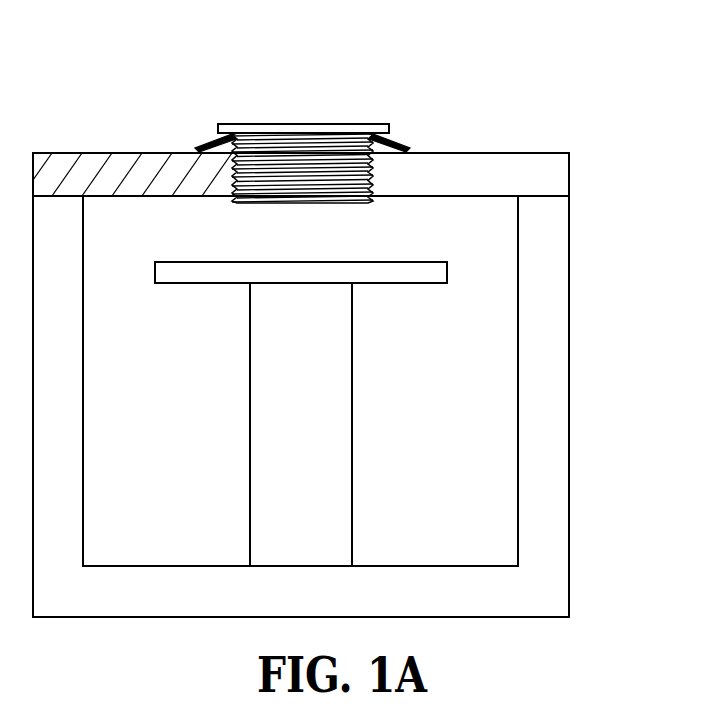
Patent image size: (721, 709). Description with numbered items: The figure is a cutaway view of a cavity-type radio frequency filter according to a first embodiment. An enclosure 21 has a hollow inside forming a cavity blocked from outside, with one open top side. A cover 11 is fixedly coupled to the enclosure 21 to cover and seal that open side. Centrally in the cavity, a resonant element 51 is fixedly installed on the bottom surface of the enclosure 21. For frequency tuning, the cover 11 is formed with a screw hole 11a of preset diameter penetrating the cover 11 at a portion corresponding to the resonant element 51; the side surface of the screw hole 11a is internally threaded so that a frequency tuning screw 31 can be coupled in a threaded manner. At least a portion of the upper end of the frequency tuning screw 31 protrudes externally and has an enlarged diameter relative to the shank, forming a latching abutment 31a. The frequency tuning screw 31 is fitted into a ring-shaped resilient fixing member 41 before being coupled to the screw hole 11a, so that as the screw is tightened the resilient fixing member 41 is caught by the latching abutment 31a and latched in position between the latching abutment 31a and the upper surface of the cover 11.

The cover 11 is at (545, 177).
The screw hole 11a is at (373, 182).
The enclosure 21 is at (555, 336).
The frequency tuning screw 31 is at (293, 123).
The latching abutment 31a is at (215, 128).
The ring-shaped resilient fixing member 41 is at (410, 148).
The resonant element 51 is at (337, 413).